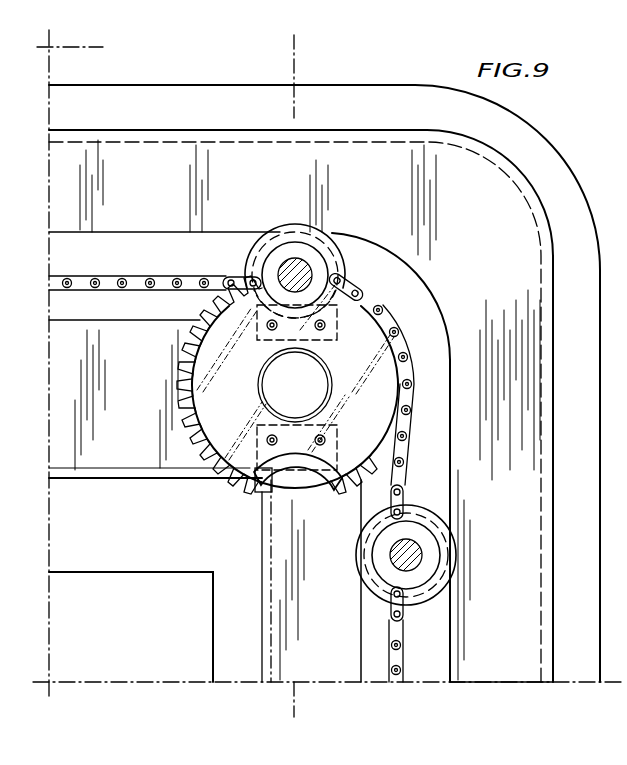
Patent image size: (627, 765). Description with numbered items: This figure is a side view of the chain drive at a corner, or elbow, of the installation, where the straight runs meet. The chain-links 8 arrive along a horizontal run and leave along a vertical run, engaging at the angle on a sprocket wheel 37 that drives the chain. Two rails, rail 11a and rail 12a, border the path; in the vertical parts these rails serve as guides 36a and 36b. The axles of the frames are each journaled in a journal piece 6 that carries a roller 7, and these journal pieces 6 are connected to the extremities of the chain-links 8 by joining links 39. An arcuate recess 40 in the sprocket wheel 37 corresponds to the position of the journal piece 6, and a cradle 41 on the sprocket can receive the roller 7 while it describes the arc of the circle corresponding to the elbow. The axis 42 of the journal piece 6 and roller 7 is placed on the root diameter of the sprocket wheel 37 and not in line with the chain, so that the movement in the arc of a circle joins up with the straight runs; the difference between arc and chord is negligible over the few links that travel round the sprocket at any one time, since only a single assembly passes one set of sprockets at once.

The journal piece 6 is at (326, 238).
The roller 7 is at (274, 258).
The chain-links 8 is at (604, 355).
The rail 11a is at (135, 390).
The rail 12a is at (125, 180).
The guide 36a is at (307, 635).
The guide 36b is at (500, 645).
The sprocket wheel 37 is at (410, 367).
The joining links 39 is at (234, 270).
The arcuate recess 40 is at (313, 462).
The cradle 41 is at (260, 480).
The axis 42 is at (292, 258).